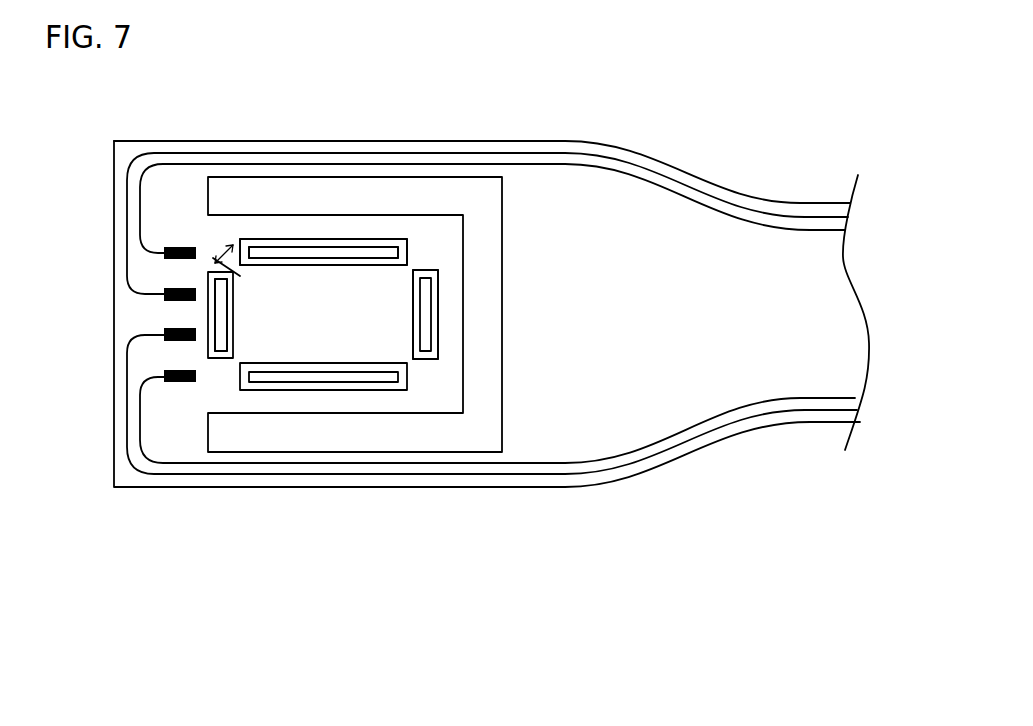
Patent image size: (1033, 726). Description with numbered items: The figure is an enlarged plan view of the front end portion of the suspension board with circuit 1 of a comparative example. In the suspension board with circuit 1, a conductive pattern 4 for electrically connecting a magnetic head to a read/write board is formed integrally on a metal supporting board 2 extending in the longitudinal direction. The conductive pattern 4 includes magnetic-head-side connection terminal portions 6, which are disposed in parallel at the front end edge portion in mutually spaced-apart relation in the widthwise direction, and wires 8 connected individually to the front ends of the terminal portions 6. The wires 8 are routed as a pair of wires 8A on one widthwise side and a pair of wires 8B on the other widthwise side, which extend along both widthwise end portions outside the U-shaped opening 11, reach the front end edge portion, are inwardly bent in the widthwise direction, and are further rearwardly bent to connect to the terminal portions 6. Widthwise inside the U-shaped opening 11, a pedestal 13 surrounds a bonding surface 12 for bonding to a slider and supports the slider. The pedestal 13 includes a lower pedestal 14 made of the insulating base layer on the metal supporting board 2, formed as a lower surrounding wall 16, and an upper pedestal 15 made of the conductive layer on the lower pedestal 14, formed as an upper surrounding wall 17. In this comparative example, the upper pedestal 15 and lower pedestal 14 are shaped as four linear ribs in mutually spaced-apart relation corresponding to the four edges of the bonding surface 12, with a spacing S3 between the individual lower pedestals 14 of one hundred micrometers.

The suspension board with circuit 1 is at (542, 608).
The metal supporting board 2 is at (788, 427).
The conductive pattern 4 is at (112, 313).
The magnetic-head-side connection terminal portions 6 is at (167, 290).
The wires 8 is at (492, 323).
The wires on one widthwise side 8A is at (692, 198).
The wires on the other widthwise side 8B is at (657, 440).
The U-shaped opening 11 is at (330, 182).
The bonding surface 12 is at (328, 314).
The pedestal 13 is at (343, 392).
The lower pedestal 14 is at (393, 242).
The upper pedestal 15 is at (361, 250).
The lower surrounding wall 16 is at (270, 242).
The upper surrounding wall 17 is at (316, 252).
The spacing between the individual lower pedestals S3 is at (217, 255).